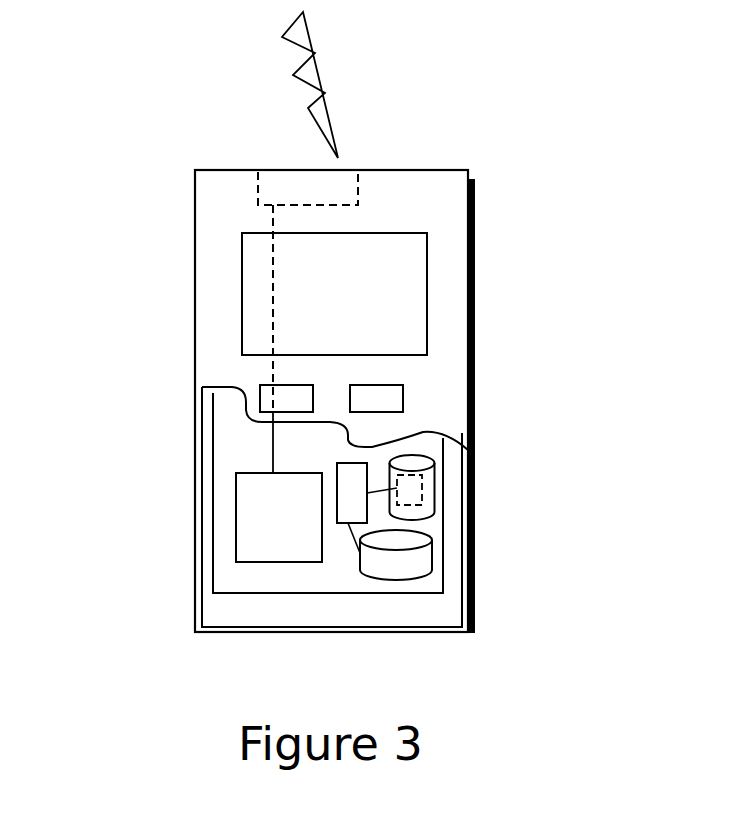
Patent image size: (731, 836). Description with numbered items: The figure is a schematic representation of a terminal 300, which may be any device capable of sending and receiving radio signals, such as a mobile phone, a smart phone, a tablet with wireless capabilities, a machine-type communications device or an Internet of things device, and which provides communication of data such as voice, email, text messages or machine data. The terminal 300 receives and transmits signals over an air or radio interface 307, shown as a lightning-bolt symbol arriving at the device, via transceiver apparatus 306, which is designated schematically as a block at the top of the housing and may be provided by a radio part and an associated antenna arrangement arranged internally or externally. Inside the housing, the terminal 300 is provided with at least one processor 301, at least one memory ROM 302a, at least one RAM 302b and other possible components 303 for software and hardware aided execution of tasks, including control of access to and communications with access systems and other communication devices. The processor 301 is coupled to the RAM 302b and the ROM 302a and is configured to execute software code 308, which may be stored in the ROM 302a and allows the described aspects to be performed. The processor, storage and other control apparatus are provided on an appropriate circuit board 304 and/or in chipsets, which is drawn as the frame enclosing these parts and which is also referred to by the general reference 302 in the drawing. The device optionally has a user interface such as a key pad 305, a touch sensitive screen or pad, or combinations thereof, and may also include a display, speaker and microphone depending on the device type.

The terminal 300 is at (195, 209).
The processor 301 is at (352, 478).
The circuit board 302 is at (235, 578).
The memory ROM 302a is at (437, 492).
The RAM 302b is at (403, 553).
The other possible components 303 is at (258, 398).
The circuit board 304 is at (242, 503).
The key pad 305 is at (257, 282).
The transceiver apparatus 306 is at (350, 184).
The air or radio interface 307 is at (337, 110).
The software code 308 is at (405, 490).